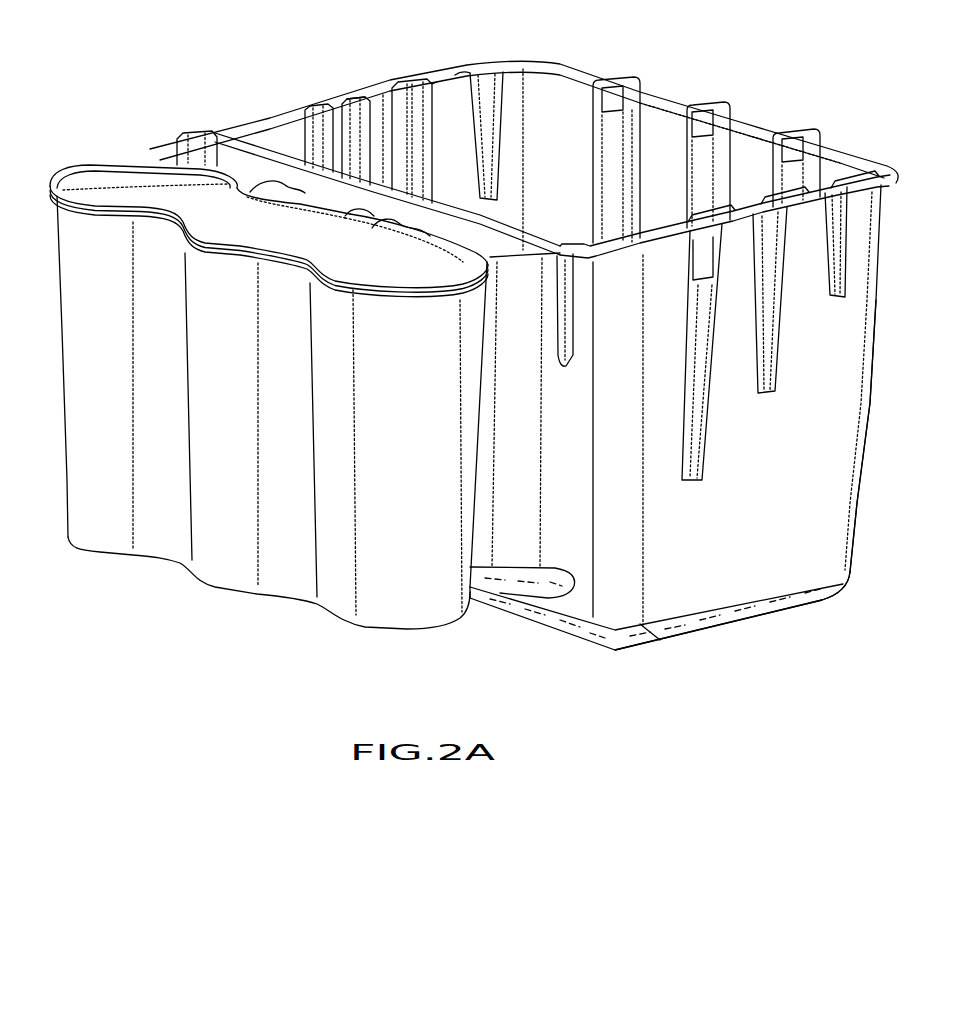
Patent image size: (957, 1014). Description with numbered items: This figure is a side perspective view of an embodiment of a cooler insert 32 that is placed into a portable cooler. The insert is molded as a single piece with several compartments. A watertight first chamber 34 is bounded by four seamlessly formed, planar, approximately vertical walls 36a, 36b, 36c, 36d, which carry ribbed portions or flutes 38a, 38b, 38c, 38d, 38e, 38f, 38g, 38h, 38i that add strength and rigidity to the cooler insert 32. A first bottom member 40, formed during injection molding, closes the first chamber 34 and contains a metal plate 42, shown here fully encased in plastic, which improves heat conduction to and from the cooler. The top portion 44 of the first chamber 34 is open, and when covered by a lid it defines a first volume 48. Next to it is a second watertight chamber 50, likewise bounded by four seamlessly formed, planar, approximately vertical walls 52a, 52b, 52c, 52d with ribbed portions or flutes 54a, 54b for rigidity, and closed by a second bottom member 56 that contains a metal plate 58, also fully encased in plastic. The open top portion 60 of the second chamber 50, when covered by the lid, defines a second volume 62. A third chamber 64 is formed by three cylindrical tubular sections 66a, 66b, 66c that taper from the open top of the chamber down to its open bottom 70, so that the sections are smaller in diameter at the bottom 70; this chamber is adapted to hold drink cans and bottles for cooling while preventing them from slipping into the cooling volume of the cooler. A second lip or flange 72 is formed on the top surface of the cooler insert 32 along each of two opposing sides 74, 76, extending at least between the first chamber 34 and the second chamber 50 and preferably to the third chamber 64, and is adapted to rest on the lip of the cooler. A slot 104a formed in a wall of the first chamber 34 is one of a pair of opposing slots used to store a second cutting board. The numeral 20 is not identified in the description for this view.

The container 20 is at (816, 588).
The cooler insert 32 is at (877, 388).
The watertight first chamber 34 is at (757, 126).
The wall 36a is at (773, 481).
The wall 36b is at (681, 200).
The wall 36c is at (453, 95).
The wall 36d is at (579, 594).
The ribbed portion or flute 38a is at (697, 383).
The ribbed portion or flute 38b is at (765, 375).
The ribbed portion or flute 38c is at (832, 298).
The ribbed portion or flute 38d is at (774, 178).
The ribbed portion or flute 38e is at (686, 164).
The ribbed portion or flute 38f is at (600, 174).
The ribbed portion or flute 38g is at (500, 110).
The ribbed portion or flute 38h is at (396, 125).
The ribbed portion or flute 38i is at (310, 138).
The first bottom member 40 is at (704, 645).
The metal plate 42 is at (656, 622).
The top portion 44 is at (582, 80).
The first volume 48 is at (589, 221).
The second watertight chamber 50 is at (536, 459).
The wall 52a is at (575, 403).
The wall 52b is at (520, 228).
The wall 52c is at (255, 150).
The wall 52d is at (470, 462).
The ribbed portion or flute 54a is at (560, 338).
The ribbed portion or flute 54b is at (210, 145).
The second bottom member 56 is at (480, 613).
The metal plate 58 is at (516, 565).
The top portion 60 is at (446, 207).
The second volume 62 is at (367, 214).
The third chamber 64 is at (388, 395).
The cylindrical tubular section 66a is at (442, 277).
The cylindrical tubular section 66b is at (240, 250).
The cylindrical tubular section 66c is at (105, 185).
The open bottom 70 is at (203, 590).
The second lip or flange 72 is at (358, 78).
The side 74 is at (826, 483).
The side 76 is at (429, 90).
The slot 104a is at (350, 105).